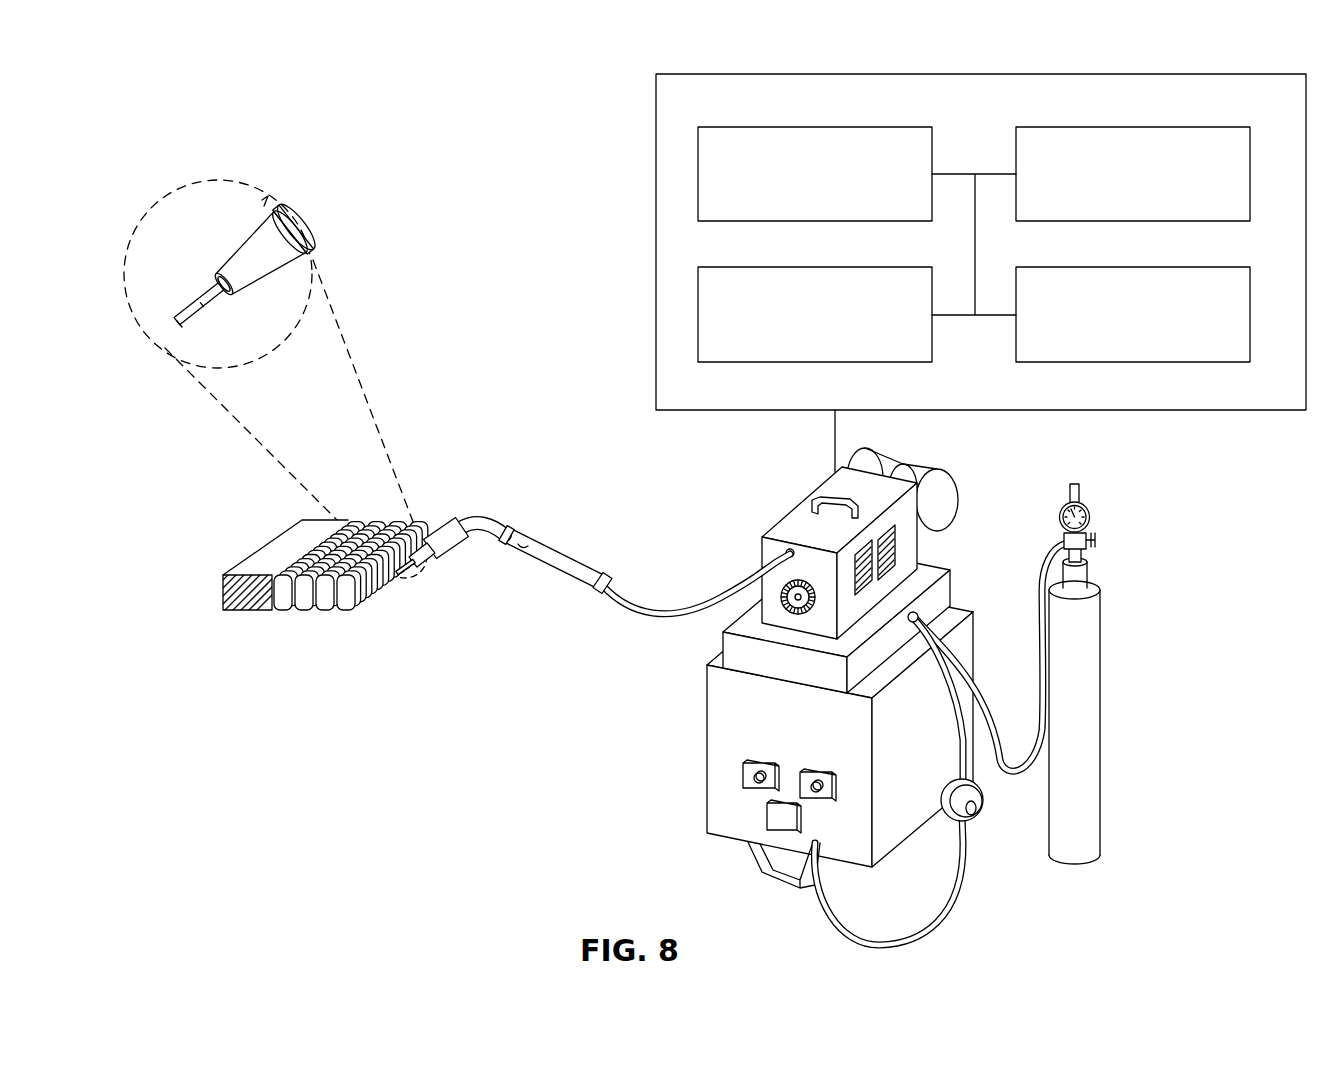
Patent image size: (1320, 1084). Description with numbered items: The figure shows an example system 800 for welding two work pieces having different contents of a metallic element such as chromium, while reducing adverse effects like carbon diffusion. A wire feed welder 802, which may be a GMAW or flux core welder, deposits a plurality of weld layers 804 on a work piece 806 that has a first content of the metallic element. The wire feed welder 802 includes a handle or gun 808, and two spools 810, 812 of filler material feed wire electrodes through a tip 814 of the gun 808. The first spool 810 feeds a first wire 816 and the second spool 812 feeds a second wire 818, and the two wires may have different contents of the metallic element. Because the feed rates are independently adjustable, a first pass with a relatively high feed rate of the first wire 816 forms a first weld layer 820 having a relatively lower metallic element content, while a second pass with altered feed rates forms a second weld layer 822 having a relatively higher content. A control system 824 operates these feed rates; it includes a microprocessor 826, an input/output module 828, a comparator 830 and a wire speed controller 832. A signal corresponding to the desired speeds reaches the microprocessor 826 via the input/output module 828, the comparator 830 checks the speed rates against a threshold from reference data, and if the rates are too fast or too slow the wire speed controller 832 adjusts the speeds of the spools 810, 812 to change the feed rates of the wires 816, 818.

The system 800 is at (512, 75).
The wire feed welder 802 is at (777, 484).
The weld layers 804 is at (352, 602).
The work piece 806 is at (250, 574).
The gun 808 is at (565, 542).
The first spool 810 is at (898, 527).
The second spool 812 is at (949, 500).
The tip 814 is at (277, 257).
The first wire 816 is at (180, 293).
The second wire 818 is at (197, 313).
The first weld layer 820 is at (282, 606).
The second weld layer 822 is at (305, 603).
The control system 824 is at (722, 73).
The microprocessor 826 is at (1088, 266).
The input/output module 828 is at (1088, 125).
The comparator 830 is at (770, 266).
The wire speed controller 832 is at (770, 125).